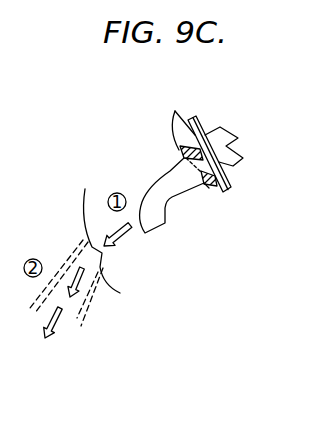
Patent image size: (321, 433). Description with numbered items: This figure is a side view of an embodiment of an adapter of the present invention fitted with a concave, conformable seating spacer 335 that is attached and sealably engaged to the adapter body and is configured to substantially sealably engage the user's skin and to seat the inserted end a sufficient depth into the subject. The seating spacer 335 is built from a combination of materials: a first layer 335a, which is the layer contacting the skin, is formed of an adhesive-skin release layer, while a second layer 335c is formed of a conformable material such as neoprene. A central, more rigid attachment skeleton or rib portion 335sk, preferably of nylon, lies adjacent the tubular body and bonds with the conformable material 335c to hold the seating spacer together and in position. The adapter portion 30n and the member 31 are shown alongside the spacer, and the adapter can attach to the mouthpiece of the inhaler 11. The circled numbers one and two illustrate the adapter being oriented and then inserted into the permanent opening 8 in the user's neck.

The seating spacer 335 is at (155, 139).
The first layer 335a is at (174, 133).
The attachment skeleton 335sk is at (182, 155).
The plate 31 is at (195, 126).
The inhaler mouthpiece 11 is at (220, 165).
The nozzle body 30n is at (145, 233).
The conformable material layer 335c is at (209, 190).
The permanent opening 8 is at (97, 246).